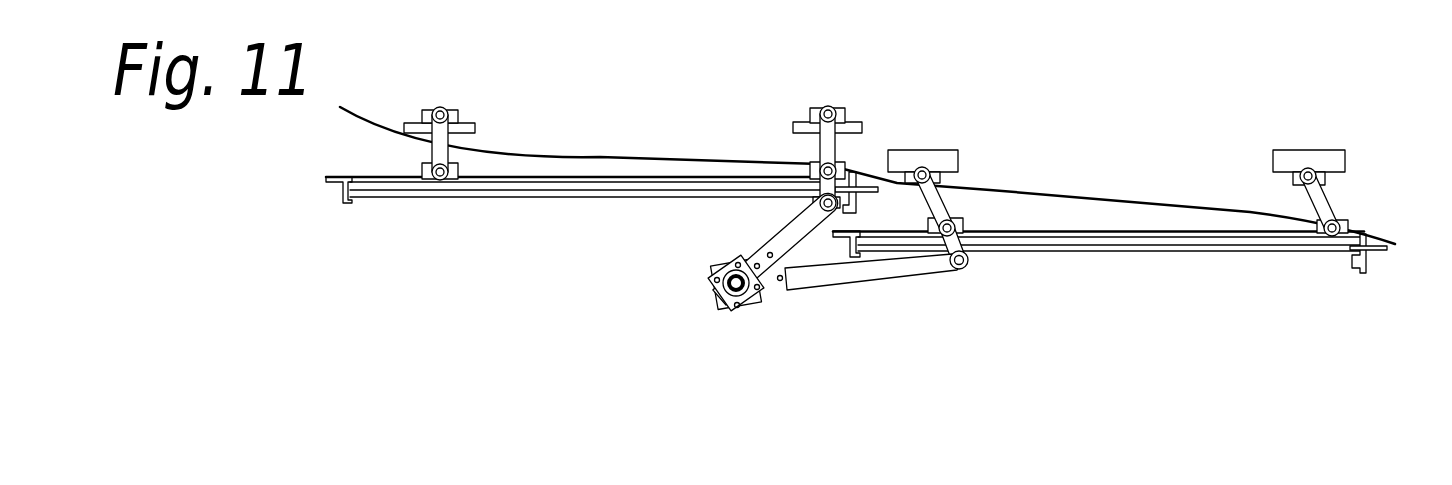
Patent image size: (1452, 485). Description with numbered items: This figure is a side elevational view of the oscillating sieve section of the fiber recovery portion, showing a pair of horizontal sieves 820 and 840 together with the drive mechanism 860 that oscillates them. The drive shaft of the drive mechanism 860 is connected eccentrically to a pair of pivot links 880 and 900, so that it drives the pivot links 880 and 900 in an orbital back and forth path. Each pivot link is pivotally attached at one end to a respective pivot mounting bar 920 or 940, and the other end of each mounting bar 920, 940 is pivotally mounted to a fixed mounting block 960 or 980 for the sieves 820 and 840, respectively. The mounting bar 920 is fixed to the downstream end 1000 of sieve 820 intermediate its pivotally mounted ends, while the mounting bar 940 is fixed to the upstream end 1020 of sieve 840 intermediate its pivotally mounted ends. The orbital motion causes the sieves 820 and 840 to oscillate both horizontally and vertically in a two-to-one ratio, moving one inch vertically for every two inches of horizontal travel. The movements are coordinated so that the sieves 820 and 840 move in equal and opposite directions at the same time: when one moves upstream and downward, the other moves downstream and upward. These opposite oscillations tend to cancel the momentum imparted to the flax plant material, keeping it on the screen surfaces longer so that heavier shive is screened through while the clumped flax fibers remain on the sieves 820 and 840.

The oscillating sieve 820 is at (542, 221).
The oscillating sieve 840 is at (1100, 272).
The drive mechanism 860 is at (778, 310).
The pivot link 880 is at (787, 239).
The pivot link 900 is at (903, 268).
The pivot mounting bar 920 is at (840, 147).
The pivot mounting bar 940 is at (930, 205).
The fixed mounting block 960 is at (840, 112).
The fixed mounting block 980 is at (945, 152).
The downstream end of sieve 1000 is at (818, 160).
The upstream end of sieve 1020 is at (963, 222).